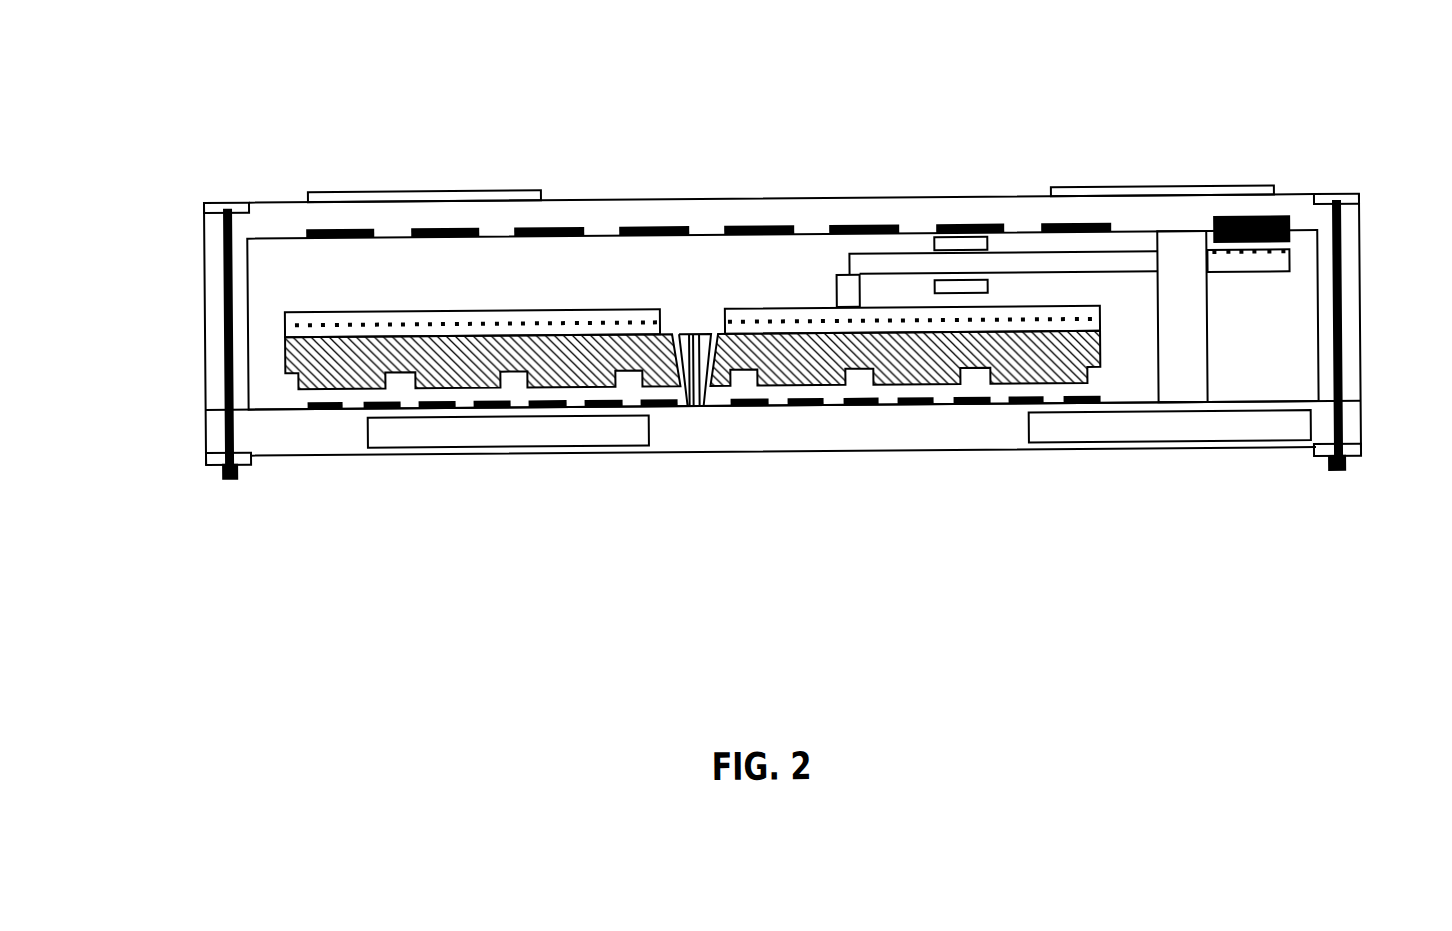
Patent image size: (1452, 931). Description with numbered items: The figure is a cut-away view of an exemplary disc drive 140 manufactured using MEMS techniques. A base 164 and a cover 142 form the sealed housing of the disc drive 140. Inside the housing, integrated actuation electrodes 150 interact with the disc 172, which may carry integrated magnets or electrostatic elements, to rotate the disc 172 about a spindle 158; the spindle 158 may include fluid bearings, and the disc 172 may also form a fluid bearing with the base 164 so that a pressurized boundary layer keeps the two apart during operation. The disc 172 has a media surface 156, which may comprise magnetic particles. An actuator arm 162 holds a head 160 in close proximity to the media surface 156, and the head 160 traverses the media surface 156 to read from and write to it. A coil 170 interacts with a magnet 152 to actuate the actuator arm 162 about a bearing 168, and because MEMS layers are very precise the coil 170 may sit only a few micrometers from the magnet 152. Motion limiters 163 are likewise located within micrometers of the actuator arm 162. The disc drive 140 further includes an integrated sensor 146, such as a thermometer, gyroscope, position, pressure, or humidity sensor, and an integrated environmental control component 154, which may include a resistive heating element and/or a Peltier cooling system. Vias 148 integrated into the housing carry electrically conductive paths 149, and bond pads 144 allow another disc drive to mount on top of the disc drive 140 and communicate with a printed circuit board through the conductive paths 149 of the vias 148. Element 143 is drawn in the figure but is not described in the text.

The disc drive 140 is at (200, 75).
The cover 142 is at (918, 216).
The heater 143 is at (1232, 438).
The bond pads 144 is at (435, 185).
The integrated sensor 146 is at (570, 440).
The vias 148 is at (223, 210).
The electrically conductive paths 149 is at (223, 479).
The integrated actuation electrodes 150 is at (965, 410).
The magnet 152 is at (1287, 225).
The integrated environmental control component 154 is at (733, 234).
The media surface 156 is at (480, 314).
The spindle 158 is at (698, 339).
The head 160 is at (837, 301).
The actuator arm 162 is at (1088, 280).
The motion limiters 163 is at (965, 291).
The base 164 is at (843, 451).
The bearing 168 is at (1187, 338).
The coil 170 is at (1223, 267).
The disc 172 is at (475, 378).